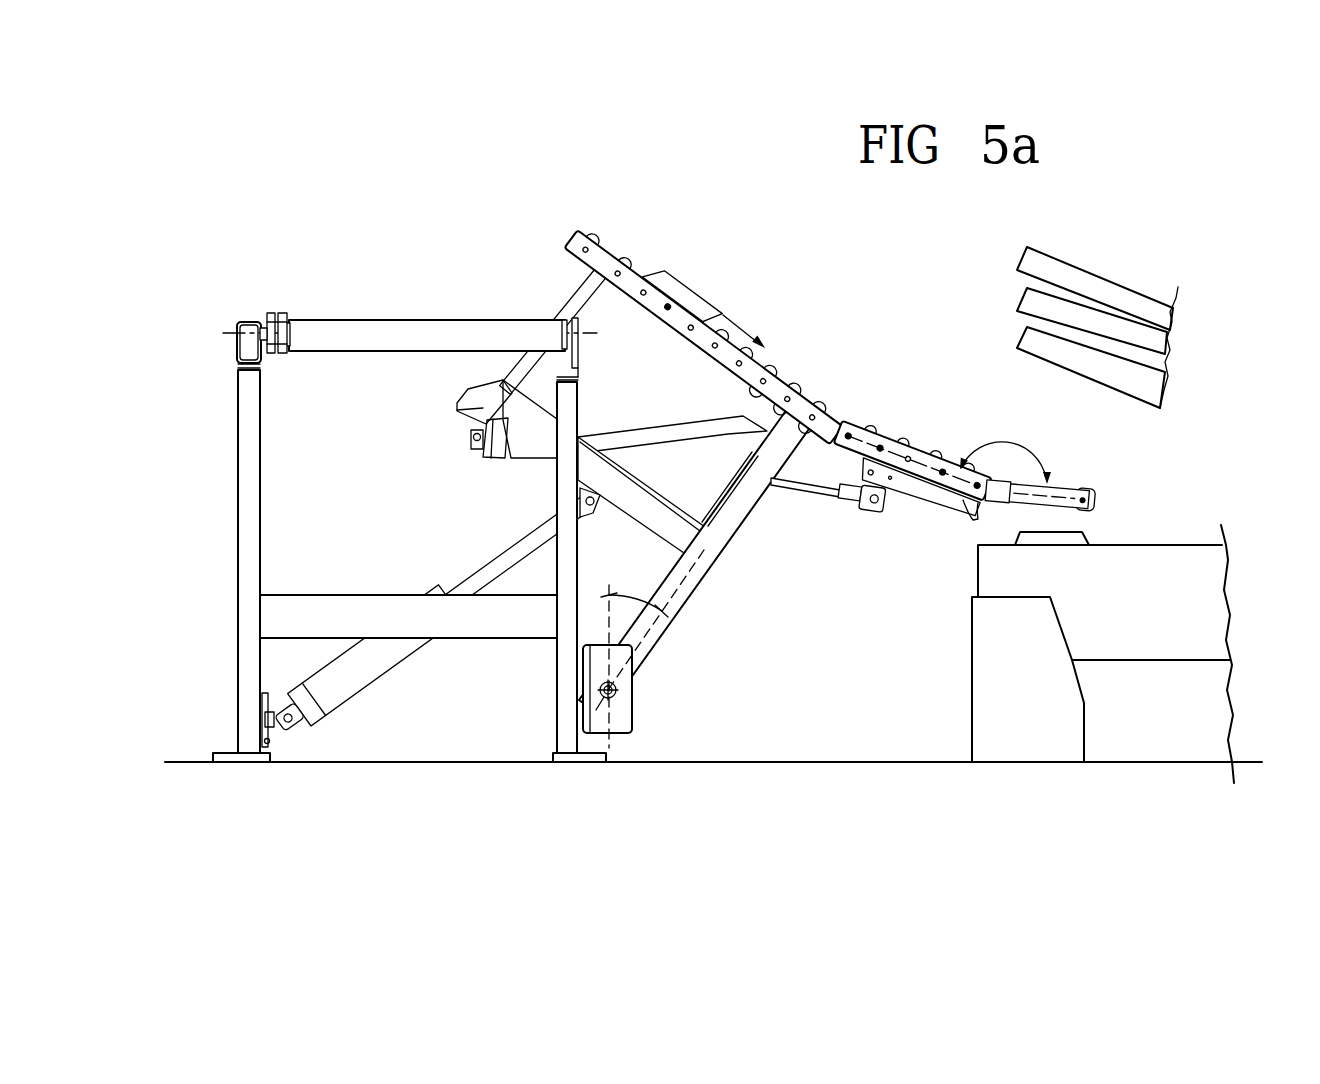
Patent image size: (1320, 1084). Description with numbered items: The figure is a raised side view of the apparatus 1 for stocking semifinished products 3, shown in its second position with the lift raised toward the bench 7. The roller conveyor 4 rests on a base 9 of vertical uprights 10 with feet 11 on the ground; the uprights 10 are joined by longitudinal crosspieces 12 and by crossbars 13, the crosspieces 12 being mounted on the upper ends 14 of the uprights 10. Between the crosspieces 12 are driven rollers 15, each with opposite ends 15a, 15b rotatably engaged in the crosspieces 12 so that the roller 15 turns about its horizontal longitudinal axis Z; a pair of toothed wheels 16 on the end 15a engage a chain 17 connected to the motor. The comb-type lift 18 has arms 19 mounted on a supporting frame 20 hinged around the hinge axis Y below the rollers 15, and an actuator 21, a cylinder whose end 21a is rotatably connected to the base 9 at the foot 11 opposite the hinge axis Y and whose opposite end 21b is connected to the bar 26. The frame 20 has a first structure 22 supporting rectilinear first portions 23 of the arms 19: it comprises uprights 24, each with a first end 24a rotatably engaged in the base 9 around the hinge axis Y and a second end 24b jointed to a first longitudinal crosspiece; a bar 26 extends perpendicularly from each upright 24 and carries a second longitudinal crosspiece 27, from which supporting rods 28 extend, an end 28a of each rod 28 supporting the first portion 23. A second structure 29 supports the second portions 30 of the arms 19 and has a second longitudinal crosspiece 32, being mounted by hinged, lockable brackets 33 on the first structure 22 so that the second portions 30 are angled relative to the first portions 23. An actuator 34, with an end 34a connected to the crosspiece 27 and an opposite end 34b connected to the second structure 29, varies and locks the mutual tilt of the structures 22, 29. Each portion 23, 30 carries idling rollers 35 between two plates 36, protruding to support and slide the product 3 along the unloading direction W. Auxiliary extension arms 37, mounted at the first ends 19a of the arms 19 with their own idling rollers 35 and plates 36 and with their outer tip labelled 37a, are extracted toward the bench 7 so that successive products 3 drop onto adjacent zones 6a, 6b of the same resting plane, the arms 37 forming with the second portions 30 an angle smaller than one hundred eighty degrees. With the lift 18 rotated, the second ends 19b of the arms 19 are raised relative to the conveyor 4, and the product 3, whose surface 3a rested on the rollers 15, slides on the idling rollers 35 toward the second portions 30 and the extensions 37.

The apparatus 1 is at (848, 800).
The semifinished product 3 is at (1073, 537).
The surface of the semifinished product 3a is at (667, 296).
The roller conveyor 4 is at (405, 301).
The zone of the resting plane 6a is at (1056, 545).
The zone of the resting plane 6b is at (1147, 545).
The bench 7 is at (1153, 234).
The base 9 is at (383, 587).
The vertical uprights 10 is at (240, 650).
The feet 11 is at (222, 765).
The longitudinal crosspieces 12 is at (240, 352).
The crossbars 13 is at (340, 613).
The upper ends of the uprights 14 is at (240, 368).
The driven rollers 15 is at (450, 305).
The roller end 15a is at (286, 322).
The roller end 15b is at (564, 330).
The toothed wheels 16 is at (293, 333).
The chain 17 is at (281, 312).
The lift 18 is at (649, 619).
The arms 19 is at (811, 358).
The first ends of the arms 19a is at (962, 426).
The second ends of the arms 19b is at (578, 206).
The supporting frame 20 is at (638, 665).
The actuator 21 is at (431, 665).
The actuator end 21a is at (300, 722).
The actuator end 21b is at (585, 508).
The first structure 22 is at (675, 655).
The first portions of the arms 23 is at (680, 334).
The uprights of the first structure 24 is at (718, 538).
The first end of the upright 24a is at (620, 698).
The second end of the upright 24b is at (787, 432).
The bar 26 is at (620, 522).
The second longitudinal crosspiece 27 is at (470, 400).
The supporting rods 28 is at (500, 372).
The end of the supporting rod 28a is at (563, 240).
The second structure 29 is at (901, 519).
The second portions of the arms 30 is at (875, 422).
The second longitudinal crosspiece of the second structure 32 is at (975, 506).
The brackets 33 is at (860, 418).
The actuator 34 is at (452, 445).
The actuator end 34a is at (477, 440).
The actuator end 34b is at (863, 498).
The idling rollers 35 is at (597, 237).
The plates 36 is at (608, 262).
The auxiliary extension arms 37 is at (1076, 458).
The rail tip 37a is at (1116, 495).
The unloading direction W is at (742, 312).
The hinge axis Y is at (613, 698).
The longitudinal axis of the roller Z is at (371, 333).